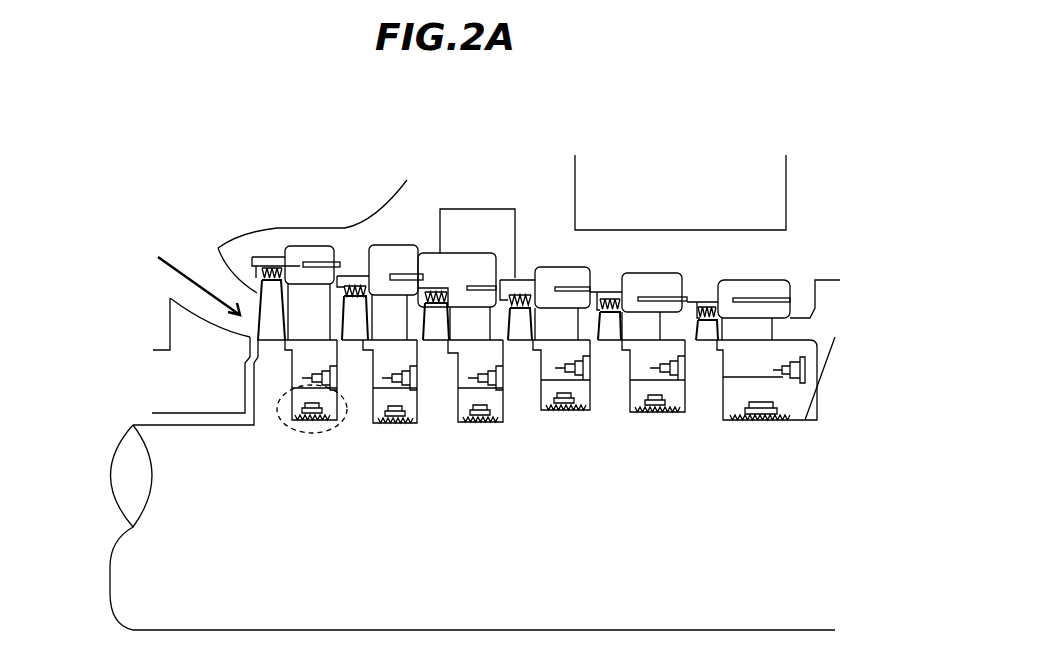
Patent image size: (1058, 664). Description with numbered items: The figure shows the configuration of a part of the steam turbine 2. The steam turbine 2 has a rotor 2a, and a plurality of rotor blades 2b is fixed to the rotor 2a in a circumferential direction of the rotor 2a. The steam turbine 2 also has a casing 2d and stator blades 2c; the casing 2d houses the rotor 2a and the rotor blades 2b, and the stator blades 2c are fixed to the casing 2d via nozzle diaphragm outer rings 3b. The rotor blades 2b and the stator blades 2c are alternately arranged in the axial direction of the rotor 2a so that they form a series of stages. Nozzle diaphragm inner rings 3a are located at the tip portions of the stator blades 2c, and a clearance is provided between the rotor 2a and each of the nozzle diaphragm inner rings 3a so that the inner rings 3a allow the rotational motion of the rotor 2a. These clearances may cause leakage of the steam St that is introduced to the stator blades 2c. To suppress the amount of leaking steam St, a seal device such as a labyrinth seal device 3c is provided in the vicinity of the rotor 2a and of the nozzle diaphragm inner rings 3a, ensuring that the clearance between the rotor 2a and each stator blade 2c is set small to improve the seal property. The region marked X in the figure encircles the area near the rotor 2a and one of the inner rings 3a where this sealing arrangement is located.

The steam turbine 2 is at (773, 121).
The rotor 2a is at (142, 552).
The rotor blades 2b is at (257, 292).
The stator blades 2c is at (397, 320).
The casing 2d is at (551, 201).
The nozzle diaphragm inner rings 3a is at (383, 360).
The nozzle diaphragm outer rings 3b is at (398, 290).
The labyrinth seal device 3c is at (420, 343).
The steam St is at (168, 267).
The detail region X is at (312, 433).